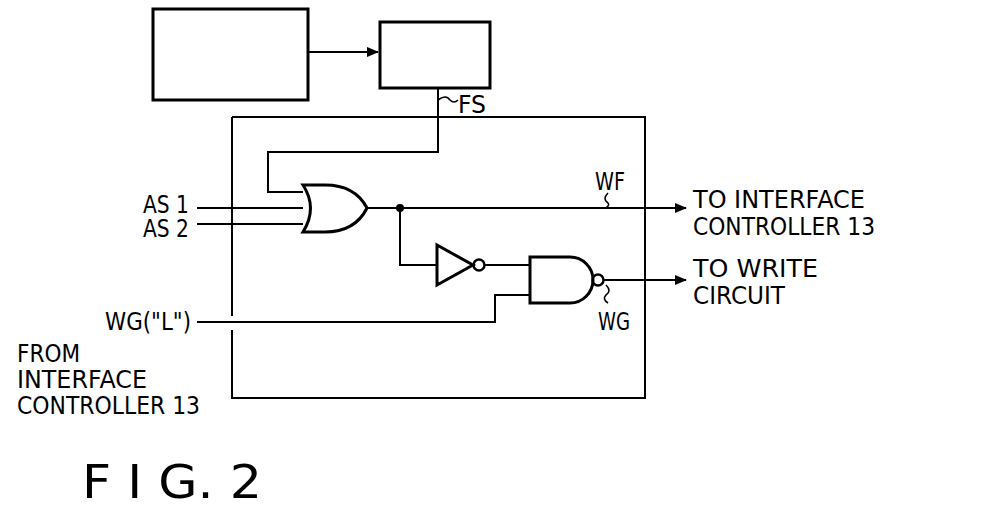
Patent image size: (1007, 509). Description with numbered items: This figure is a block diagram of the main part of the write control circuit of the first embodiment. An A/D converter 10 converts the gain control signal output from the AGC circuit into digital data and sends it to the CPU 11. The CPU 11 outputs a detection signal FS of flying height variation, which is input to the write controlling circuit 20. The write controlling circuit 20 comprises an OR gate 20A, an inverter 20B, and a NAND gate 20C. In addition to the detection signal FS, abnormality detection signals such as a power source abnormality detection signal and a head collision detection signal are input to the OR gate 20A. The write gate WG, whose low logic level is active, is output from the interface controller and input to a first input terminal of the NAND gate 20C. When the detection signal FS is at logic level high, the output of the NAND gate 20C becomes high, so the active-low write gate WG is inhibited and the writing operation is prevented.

The A/D converter 10 is at (170, 100).
The CPU 11 is at (490, 48).
The write controlling circuit 20 is at (597, 117).
The OR gate 20A is at (326, 233).
The inverter 20B is at (453, 247).
The NAND gate 20C is at (545, 257).